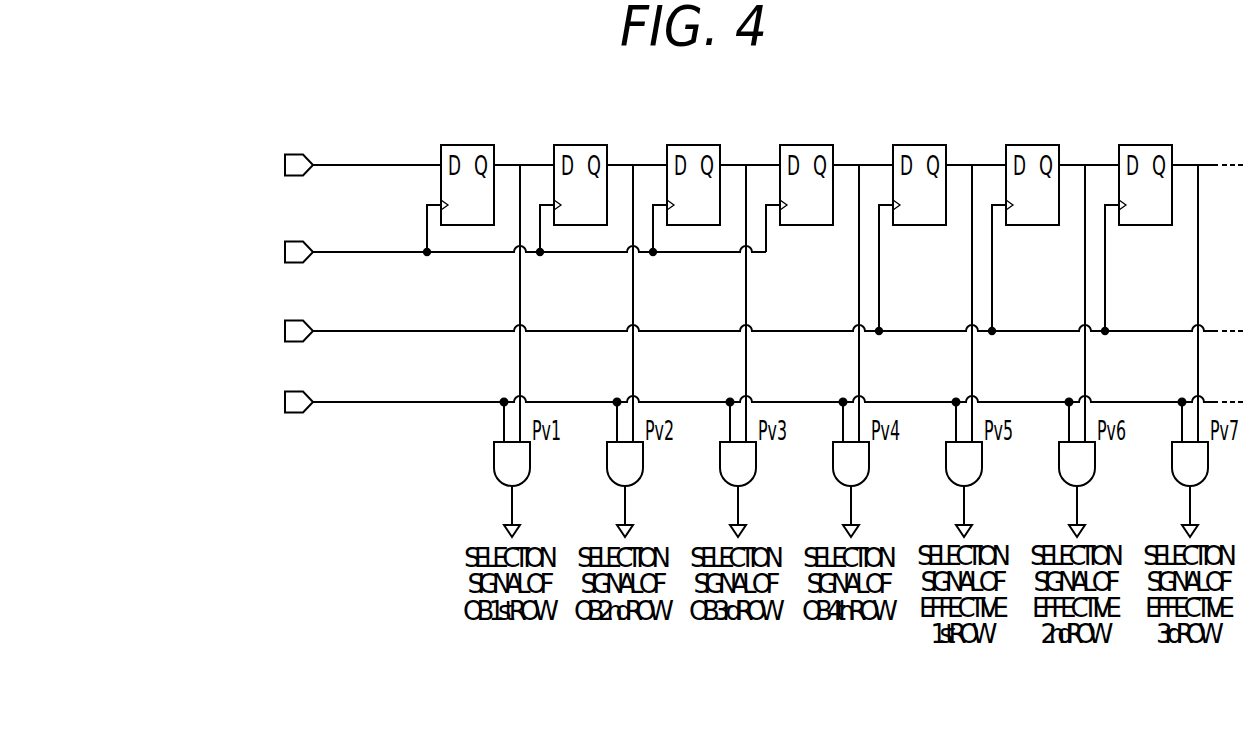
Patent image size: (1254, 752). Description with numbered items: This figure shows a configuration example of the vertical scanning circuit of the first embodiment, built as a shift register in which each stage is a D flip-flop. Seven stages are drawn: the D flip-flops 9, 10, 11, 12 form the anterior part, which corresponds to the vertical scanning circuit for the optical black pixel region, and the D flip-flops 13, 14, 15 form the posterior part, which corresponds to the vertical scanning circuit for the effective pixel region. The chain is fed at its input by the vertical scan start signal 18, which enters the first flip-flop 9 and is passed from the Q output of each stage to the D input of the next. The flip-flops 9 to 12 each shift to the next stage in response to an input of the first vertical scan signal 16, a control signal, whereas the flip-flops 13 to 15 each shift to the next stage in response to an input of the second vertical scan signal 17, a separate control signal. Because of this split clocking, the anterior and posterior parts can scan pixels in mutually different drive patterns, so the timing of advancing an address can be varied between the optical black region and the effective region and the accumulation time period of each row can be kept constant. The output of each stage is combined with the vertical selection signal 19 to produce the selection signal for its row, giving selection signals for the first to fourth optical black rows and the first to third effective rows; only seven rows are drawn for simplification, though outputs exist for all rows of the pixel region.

The D flip-flop 9 is at (469, 145).
The D flip-flop 10 is at (582, 145).
The D flip-flop 11 is at (695, 145).
The D flip-flop 12 is at (808, 145).
The D flip-flop 13 is at (921, 145).
The D flip-flop 14 is at (1034, 145).
The D flip-flop 15 is at (1147, 145).
The vertical scan signal 1 16 is at (128, 252).
The vertical scan signal 2 17 is at (128, 329).
The vertical scan start signal 18 is at (102, 128).
The vertical selection signal 19 is at (128, 392).